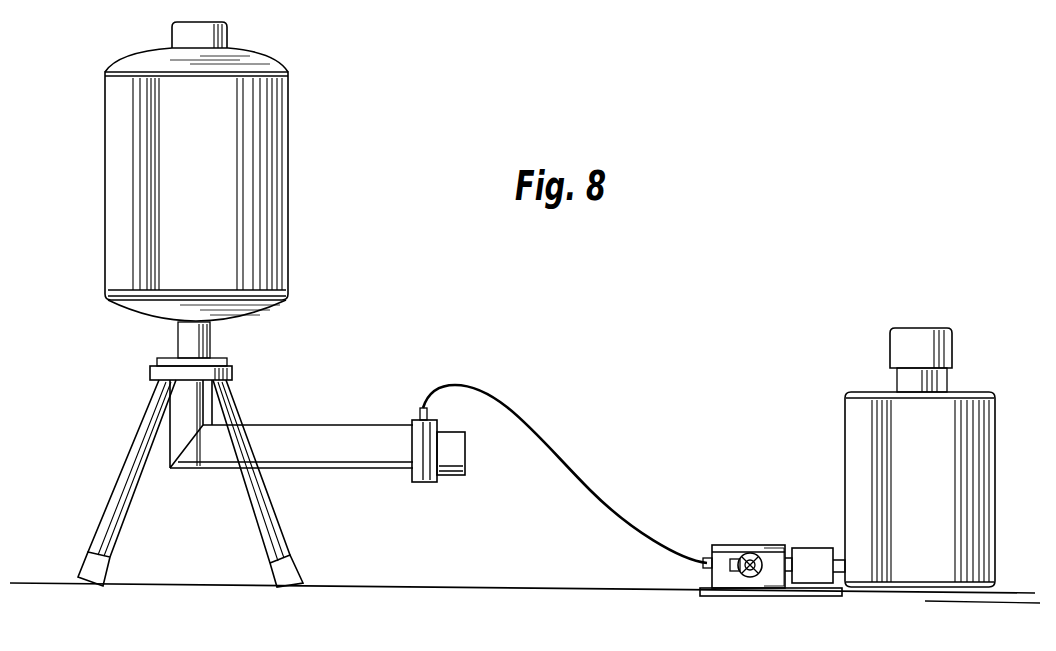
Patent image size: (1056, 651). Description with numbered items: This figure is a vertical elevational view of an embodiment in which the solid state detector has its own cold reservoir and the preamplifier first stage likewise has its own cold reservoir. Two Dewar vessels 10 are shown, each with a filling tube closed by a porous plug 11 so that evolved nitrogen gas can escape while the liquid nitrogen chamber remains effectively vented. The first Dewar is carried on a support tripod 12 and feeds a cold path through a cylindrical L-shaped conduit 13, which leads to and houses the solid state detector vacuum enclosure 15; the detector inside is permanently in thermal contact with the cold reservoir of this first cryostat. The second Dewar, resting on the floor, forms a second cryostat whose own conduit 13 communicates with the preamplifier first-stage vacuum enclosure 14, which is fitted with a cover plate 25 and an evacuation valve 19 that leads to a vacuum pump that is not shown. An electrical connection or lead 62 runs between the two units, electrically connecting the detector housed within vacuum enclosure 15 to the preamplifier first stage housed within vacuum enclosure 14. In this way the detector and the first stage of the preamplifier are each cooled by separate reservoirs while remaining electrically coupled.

The canister 10 is at (290, 160).
The porous plug 11 is at (227, 33).
The support tripod 12 is at (237, 413).
The cylindrical L-shaped conduit 13 is at (400, 473).
The preamplifier (first stage) vacuum enclosure 14 is at (770, 557).
The solid state detector vacuum enclosure 15 is at (450, 457).
The evacuation valve 19 is at (752, 570).
The cover plate 25 is at (731, 545).
The electrical connection or lead 62 is at (568, 465).